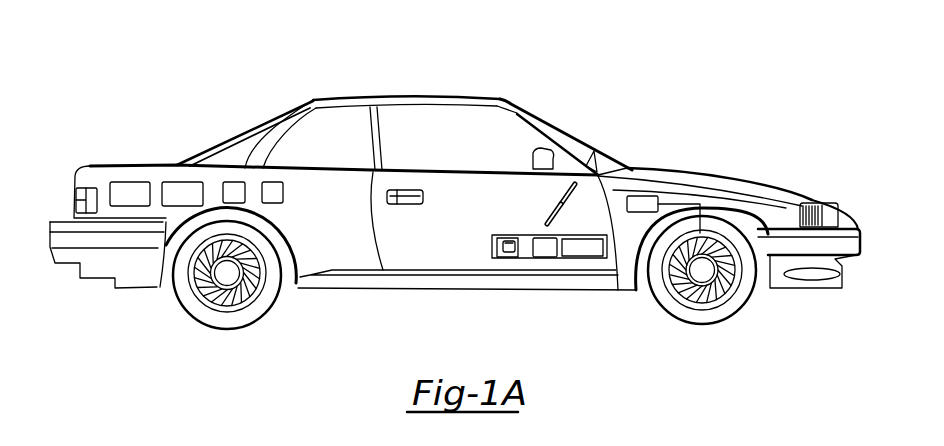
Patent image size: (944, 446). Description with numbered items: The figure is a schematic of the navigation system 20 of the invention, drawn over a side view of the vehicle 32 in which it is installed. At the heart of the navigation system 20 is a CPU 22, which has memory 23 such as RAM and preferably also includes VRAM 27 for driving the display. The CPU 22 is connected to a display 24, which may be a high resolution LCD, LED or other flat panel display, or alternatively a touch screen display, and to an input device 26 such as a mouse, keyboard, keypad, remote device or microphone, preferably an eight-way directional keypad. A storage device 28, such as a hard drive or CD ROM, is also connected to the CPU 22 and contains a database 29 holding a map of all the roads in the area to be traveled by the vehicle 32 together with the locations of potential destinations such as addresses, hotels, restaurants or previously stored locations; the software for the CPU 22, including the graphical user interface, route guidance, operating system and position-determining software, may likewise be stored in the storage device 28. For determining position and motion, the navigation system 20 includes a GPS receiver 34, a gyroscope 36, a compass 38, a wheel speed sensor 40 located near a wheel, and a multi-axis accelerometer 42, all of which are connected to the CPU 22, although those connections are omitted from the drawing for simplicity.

The navigation system 20 is at (181, 54).
The CPU 22 is at (553, 259).
The memory 23 is at (594, 259).
The display 24 is at (562, 188).
The input device 26 is at (552, 208).
The VRAM 27 is at (543, 237).
The storage device 28 is at (497, 259).
The database 29 is at (512, 258).
The vehicle 32 is at (415, 90).
The GPS receiver 34 is at (127, 183).
The gyroscope 36 is at (176, 183).
The compass 38 is at (235, 182).
The wheel speed sensor 40 is at (641, 195).
The multi-axis accelerometer 42 is at (275, 182).